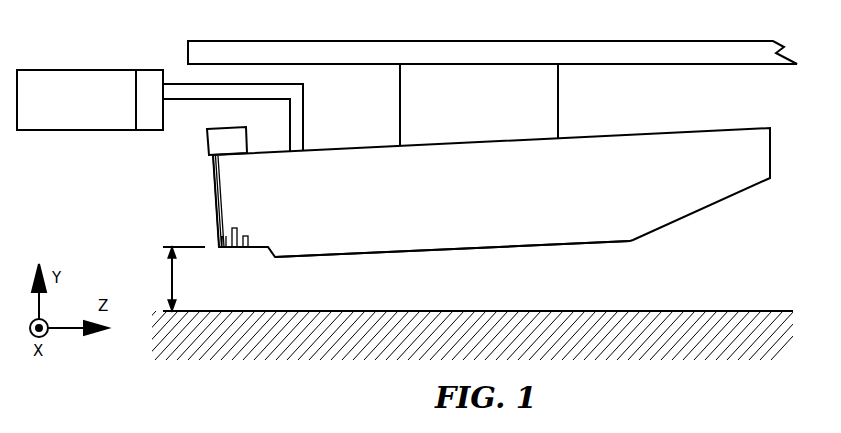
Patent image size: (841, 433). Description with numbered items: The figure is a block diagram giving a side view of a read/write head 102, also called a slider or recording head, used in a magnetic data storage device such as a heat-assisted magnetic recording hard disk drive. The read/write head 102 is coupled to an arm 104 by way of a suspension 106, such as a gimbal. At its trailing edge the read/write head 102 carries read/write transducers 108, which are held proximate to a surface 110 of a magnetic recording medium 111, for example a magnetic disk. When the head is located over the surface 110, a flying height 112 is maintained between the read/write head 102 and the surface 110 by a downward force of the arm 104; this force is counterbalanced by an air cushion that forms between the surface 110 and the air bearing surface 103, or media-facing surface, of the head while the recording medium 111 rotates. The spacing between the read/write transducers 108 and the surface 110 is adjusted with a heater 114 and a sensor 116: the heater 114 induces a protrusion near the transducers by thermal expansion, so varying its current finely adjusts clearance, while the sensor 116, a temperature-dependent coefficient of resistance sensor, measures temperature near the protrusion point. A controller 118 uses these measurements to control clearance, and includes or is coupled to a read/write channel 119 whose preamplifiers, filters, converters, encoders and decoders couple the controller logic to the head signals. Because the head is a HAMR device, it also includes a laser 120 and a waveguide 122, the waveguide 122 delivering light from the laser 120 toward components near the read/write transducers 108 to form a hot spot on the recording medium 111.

The read/write head 102 is at (675, 135).
The air bearing surface 103 is at (360, 254).
The arm 104 is at (720, 47).
The suspension 106 is at (558, 100).
The read/write transducers 108 is at (213, 226).
The surface 110 is at (677, 311).
The magnetic recording medium 111 is at (690, 350).
The flying height 112 is at (168, 279).
The heater 114 is at (234, 250).
The sensor 116 is at (246, 250).
The controller 118 is at (72, 70).
The read/write channel 119 is at (146, 70).
The laser 120 is at (228, 139).
The waveguide 122 is at (211, 176).